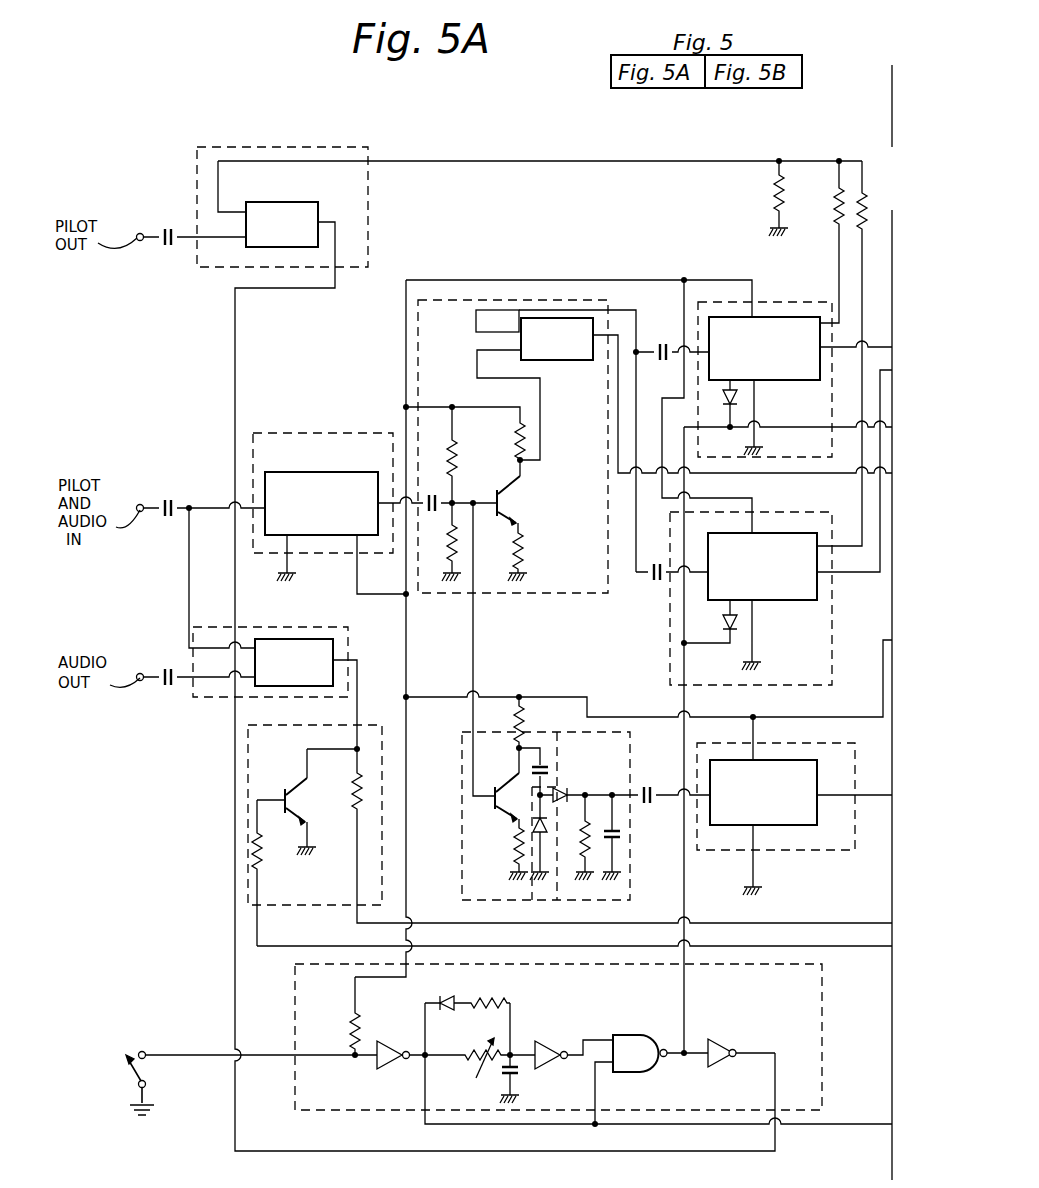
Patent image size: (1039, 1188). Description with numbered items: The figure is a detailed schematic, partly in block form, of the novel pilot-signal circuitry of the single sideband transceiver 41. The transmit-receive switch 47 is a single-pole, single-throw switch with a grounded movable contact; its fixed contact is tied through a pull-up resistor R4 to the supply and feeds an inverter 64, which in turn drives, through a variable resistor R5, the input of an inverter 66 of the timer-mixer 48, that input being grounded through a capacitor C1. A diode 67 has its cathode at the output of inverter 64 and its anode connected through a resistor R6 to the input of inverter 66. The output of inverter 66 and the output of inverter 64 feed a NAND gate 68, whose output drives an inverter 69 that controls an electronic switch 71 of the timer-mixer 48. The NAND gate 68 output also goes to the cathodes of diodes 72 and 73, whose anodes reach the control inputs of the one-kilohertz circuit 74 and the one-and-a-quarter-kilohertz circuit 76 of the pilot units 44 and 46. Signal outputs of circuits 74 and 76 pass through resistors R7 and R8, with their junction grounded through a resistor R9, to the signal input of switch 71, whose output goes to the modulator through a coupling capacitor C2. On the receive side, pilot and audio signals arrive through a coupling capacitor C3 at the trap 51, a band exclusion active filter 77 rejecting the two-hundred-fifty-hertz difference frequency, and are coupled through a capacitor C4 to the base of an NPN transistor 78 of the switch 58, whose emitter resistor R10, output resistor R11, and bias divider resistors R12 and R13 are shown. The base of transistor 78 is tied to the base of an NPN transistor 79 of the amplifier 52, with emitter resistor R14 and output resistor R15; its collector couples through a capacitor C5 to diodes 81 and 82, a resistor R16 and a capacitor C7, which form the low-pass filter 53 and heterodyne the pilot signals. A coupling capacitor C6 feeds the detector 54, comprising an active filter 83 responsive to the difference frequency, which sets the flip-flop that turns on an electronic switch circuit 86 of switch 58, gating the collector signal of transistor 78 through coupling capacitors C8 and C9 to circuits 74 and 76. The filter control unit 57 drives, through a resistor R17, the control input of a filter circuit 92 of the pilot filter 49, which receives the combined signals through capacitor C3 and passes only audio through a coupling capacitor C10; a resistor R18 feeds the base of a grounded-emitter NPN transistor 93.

The single sideband transceiver 41 is at (205, 861).
The 1 kHz pilot unit 44 is at (778, 302).
The 1.25 kHz pilot unit 46 is at (832, 646).
The transmit-receive switch 47 is at (130, 1073).
The timer-mixer 48 is at (368, 201).
The pilot signal filter 49 is at (348, 637).
The 250 Hz trap 51 is at (345, 433).
The amplifier 52 is at (462, 860).
The low-pass filter 53 is at (605, 716).
The 250 Hz detector 54 is at (805, 850).
The filter control unit 57 is at (248, 796).
The switch 58 is at (553, 596).
The inverter 64 is at (388, 1041).
The inverter 66 is at (545, 1041).
The diode 67 is at (452, 996).
The NAND gate 68 is at (636, 1035).
The inverter 69 is at (725, 1040).
The electronic switch 71 is at (290, 202).
The diode 72 is at (740, 402).
The diode 73 is at (736, 630).
The 1 kHz circuit 74 is at (806, 317).
The 1.25 kHz circuit 76 is at (795, 533).
The band exclusion active filter 77 is at (290, 472).
The NPN transistor 78 is at (516, 511).
The NPN transistor 79 is at (506, 812).
The diode 81 is at (546, 835).
The diode 82 is at (565, 792).
The active filter 83 is at (815, 775).
The electronic switch circuit 86 is at (570, 360).
The filter circuit 92 is at (318, 639).
The NPN transistor 93 is at (291, 814).
The capacitor C1 is at (520, 1078).
The coupling capacitor C2 is at (167, 229).
The coupling capacitor C3 is at (169, 497).
The coupling capacitor C4 is at (432, 495).
The coupling capacitor C5 is at (549, 769).
The coupling capacitor C6 is at (647, 787).
The capacitor C7 is at (620, 836).
The coupling capacitor C8 is at (662, 343).
The coupling capacitor C9 is at (657, 581).
The coupling capacitor C10 is at (168, 689).
The pull-up resistor R4 is at (350, 1016).
The variable resistor R5 is at (480, 1065).
The resistor R6 is at (486, 1003).
The resistor R7 is at (842, 200).
The resistor R8 is at (866, 218).
The resistor R9 is at (774, 190).
The emitter resistor R10 is at (528, 545).
The output resistor R11 is at (525, 445).
The resistor R12 is at (460, 453).
The resistor R13 is at (452, 536).
The emitter resistor R14 is at (513, 845).
The output resistor R15 is at (519, 713).
The resistor R16 is at (579, 860).
The resistor R17 is at (357, 796).
The resistor R18 is at (262, 866).